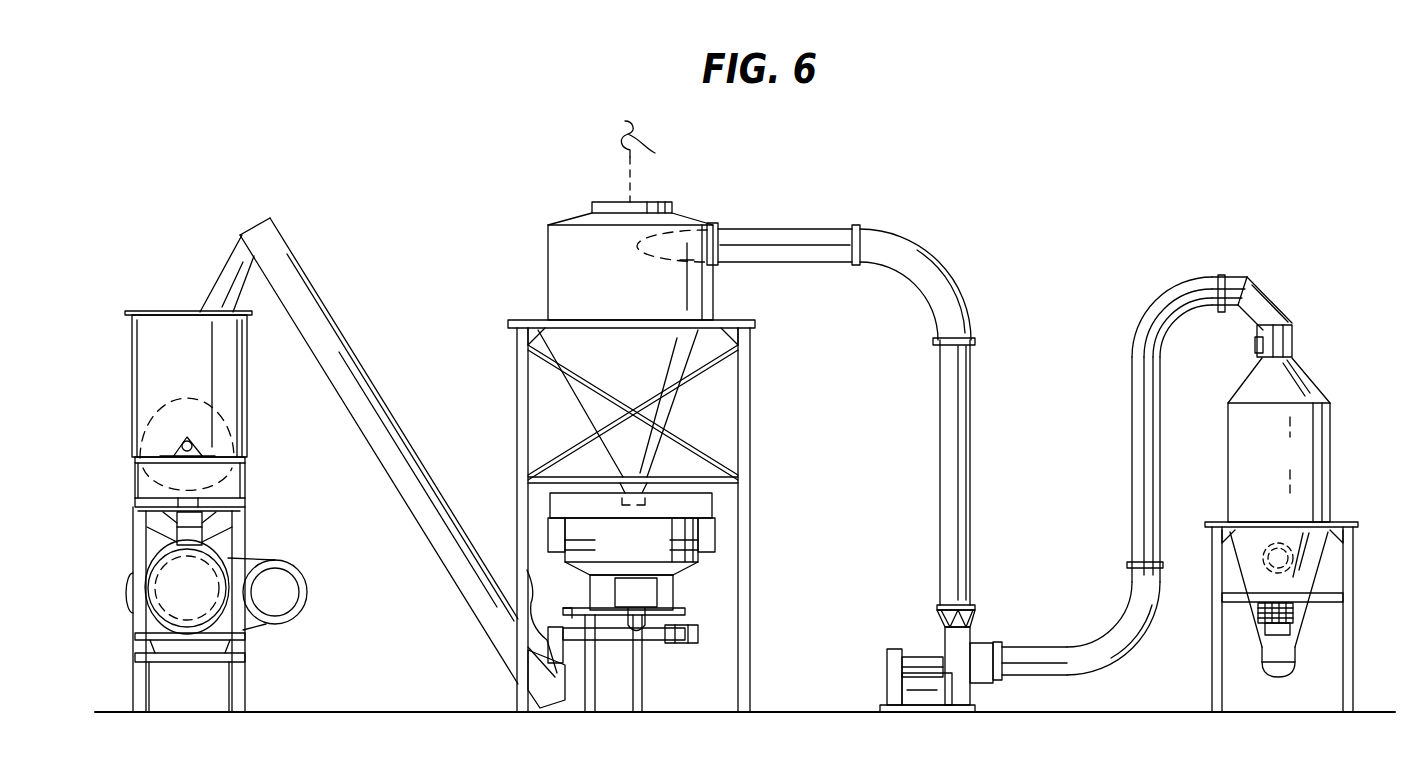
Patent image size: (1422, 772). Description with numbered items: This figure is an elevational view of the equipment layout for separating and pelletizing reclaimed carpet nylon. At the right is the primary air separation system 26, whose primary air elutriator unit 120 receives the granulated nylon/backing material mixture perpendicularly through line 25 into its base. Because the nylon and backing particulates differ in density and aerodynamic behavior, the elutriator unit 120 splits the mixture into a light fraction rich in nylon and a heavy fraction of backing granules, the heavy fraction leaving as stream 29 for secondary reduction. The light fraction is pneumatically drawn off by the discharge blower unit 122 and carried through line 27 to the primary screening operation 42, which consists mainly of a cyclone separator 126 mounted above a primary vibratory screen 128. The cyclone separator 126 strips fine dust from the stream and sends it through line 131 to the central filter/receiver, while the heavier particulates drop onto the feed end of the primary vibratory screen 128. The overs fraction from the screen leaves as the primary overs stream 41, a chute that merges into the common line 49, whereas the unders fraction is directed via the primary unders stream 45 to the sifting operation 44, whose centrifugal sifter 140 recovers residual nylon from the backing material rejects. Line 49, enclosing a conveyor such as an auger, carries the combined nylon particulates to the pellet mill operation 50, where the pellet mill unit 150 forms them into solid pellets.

The pellet mill unit 150 is at (152, 562).
The pellet mill operation 50 is at (308, 547).
The line 49 is at (328, 328).
The cyclone separator 126 is at (650, 298).
The line 131 is at (662, 161).
The primary screening operation 42 is at (722, 434).
The primary overs stream 41 is at (527, 570).
The primary vibratory screen 128 is at (650, 559).
The primary unders stream 45 is at (642, 598).
The sifting operation 44 is at (697, 606).
The centrifugal sifter 140 is at (654, 634).
The line 27 is at (820, 242).
The discharge blower unit 122 is at (952, 647).
The primary air elutriator unit 120 is at (1293, 463).
The primary air separation system 26 is at (1364, 461).
The line 25 is at (1293, 562).
The stream 29 is at (1277, 667).